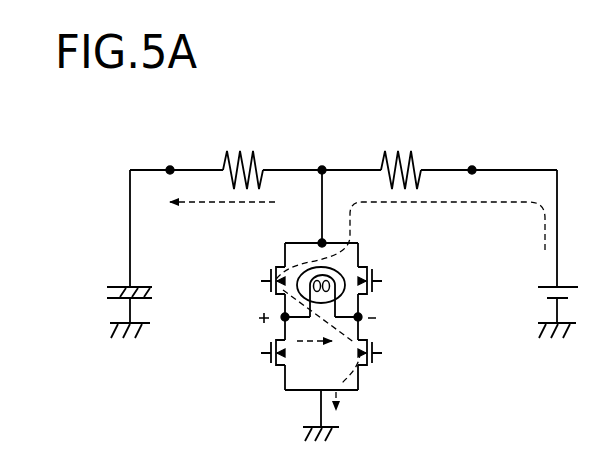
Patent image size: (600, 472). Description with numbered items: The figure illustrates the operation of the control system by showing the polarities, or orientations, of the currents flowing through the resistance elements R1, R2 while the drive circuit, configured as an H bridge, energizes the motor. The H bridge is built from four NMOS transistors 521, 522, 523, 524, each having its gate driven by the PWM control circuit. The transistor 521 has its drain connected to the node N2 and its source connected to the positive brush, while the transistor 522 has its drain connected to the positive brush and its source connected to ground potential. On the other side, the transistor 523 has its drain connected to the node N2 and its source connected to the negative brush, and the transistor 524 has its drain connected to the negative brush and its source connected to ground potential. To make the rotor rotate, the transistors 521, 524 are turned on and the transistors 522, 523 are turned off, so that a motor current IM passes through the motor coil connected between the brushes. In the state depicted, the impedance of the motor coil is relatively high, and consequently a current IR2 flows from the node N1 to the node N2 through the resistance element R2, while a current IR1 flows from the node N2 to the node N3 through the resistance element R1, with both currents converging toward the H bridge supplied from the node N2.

The node N1 is at (468, 154).
The node N2 is at (317, 154).
The node N3 is at (168, 154).
The resistance element R1 is at (243, 155).
The resistance element R2 is at (401, 155).
The transistor 521 is at (238, 277).
The transistor 522 is at (238, 351).
The transistor 523 is at (408, 277).
The transistor 524 is at (408, 351).
The current IR1 is at (222, 224).
The current IR2 is at (409, 306).
The motor current IM is at (314, 357).